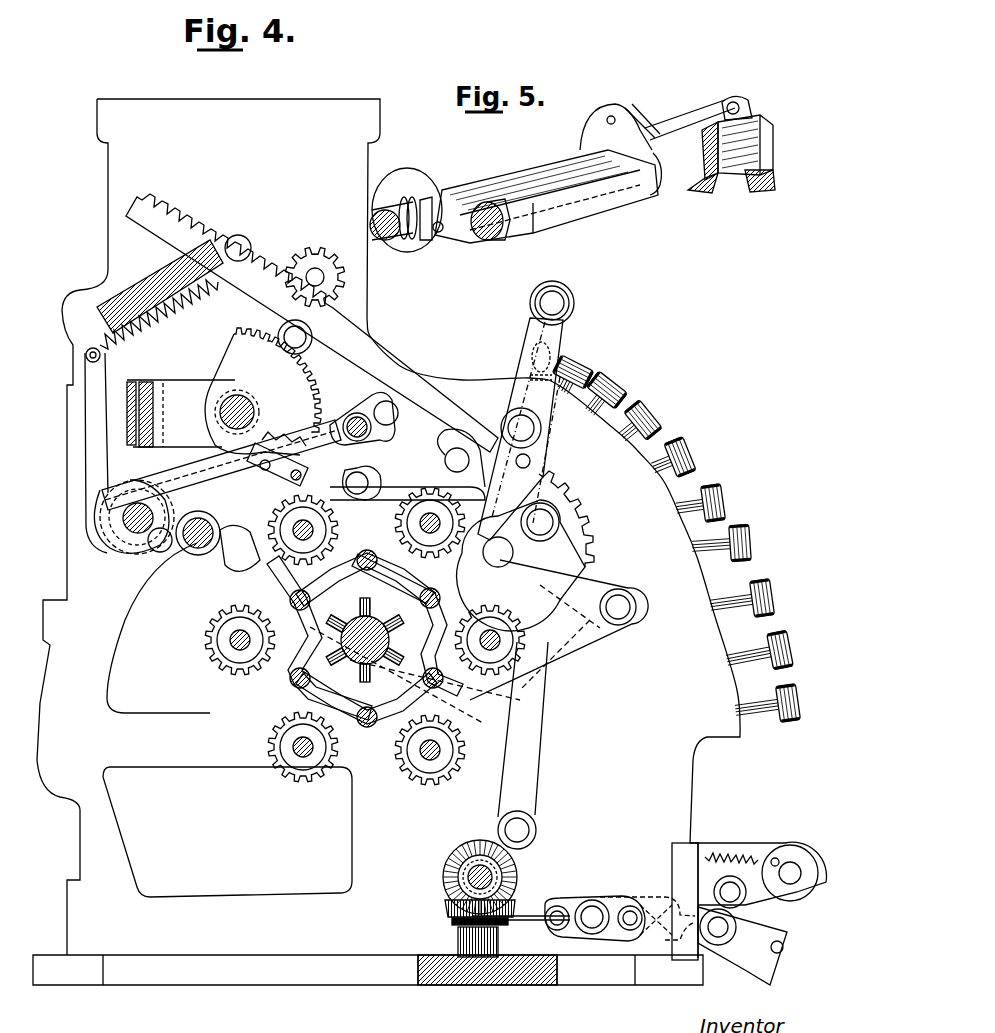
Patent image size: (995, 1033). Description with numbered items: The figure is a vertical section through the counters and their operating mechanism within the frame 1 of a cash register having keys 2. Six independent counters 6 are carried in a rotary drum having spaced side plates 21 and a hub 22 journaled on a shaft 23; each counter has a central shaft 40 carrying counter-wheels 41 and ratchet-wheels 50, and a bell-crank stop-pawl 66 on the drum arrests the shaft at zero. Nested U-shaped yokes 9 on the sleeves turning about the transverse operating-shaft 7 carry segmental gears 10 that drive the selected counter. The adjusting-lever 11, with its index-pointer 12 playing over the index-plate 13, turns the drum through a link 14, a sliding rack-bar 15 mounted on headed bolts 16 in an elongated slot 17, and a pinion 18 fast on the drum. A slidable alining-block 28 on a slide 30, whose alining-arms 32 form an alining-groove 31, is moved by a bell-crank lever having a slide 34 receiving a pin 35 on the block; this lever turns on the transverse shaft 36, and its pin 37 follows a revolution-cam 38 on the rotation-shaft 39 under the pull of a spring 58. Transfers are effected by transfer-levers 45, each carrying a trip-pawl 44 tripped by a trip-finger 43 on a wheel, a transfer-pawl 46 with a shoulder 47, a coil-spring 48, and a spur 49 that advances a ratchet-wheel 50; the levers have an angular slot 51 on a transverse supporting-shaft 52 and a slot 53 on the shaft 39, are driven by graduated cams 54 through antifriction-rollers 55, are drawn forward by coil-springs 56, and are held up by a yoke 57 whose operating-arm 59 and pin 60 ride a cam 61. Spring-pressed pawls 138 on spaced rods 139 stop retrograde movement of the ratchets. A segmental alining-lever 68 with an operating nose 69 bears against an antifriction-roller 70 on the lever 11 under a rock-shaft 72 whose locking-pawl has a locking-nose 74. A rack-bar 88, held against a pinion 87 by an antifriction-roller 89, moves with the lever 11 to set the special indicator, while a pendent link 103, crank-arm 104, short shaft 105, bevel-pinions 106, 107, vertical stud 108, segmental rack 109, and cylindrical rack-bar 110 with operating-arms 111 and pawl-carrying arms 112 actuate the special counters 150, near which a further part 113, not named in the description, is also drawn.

In FIG. 4, the frame 1 is at (386, 542).
In FIG. 4, the keys 2 is at (612, 393).
In FIG. 4, the independent counters 6 is at (223, 657).
In FIG. 4, the transverse operating-shaft 7 is at (263, 391).
In FIG. 4, the U-shaped yokes 9 is at (145, 380).
In FIG. 4, the segmental gear 10 is at (252, 396).
In FIG. 4, the adjusting-lever 11 is at (535, 333).
In FIG. 4, the index-pointer 12 is at (520, 372).
In FIG. 4, the index-plate 13 is at (540, 690).
In FIG. 4, the link 14 is at (545, 630).
In FIG. 4, the sliding rack-bar 15 is at (535, 668).
In FIG. 4, the headed bolts 16 is at (375, 714).
In FIG. 4, the elongated slot 17 is at (562, 597).
In FIG. 4, the pinion 18 is at (350, 588).
In FIG. 4, the side plates 21 is at (290, 682).
In FIG. 4, the hub 22 is at (340, 632).
In FIG. 4, the shaft 23 is at (398, 596).
In FIG. 5, the alining-block 28 is at (775, 160).
In FIG. 5, the slide 30 is at (518, 172).
In FIG. 4, the alining-groove 31 is at (221, 465).
In FIG. 5, the alining-groove 31 is at (773, 136).
In FIG. 4, the alining-arms 32 is at (289, 622).
In FIG. 5, the alining-arms 32 is at (760, 193).
In FIG. 5, the slide 34 is at (733, 98).
In FIG. 5, the pin 35 is at (748, 100).
In FIG. 4, the transverse shaft 36 is at (197, 553).
In FIG. 5, the transverse shaft 36 is at (565, 205).
In FIG. 4, the pin 37 is at (133, 478).
In FIG. 5, the pin 37 is at (614, 112).
In FIG. 4, the revolution-cam 38 is at (150, 479).
In FIG. 5, the revolution-cam 38 is at (643, 126).
In FIG. 4, the rotation-shaft 39 is at (130, 533).
In FIG. 4, the central shaft 40 is at (300, 531).
In FIG. 4, the counter-wheels 41 is at (273, 517).
In FIG. 4, the trip-finger 43 is at (340, 514).
In FIG. 4, the trip-pawl 44 is at (240, 480).
In FIG. 4, the transfer-levers 45 is at (88, 440).
In FIG. 4, the transfer-pawls 46 is at (322, 420).
In FIG. 4, the shoulder 47 is at (255, 447).
In FIG. 4, the coil-spring 48 is at (352, 470).
In FIG. 4, the spur 49 is at (305, 482).
In FIG. 4, the ratchet-wheel 50 is at (307, 563).
In FIG. 5, the ratchet-wheel 50 is at (443, 232).
In FIG. 4, the angular slot 51 is at (368, 416).
In FIG. 4, the transverse supporting-shaft 52 is at (157, 550).
In FIG. 4, the slot 53 is at (390, 413).
In FIG. 4, the graduated cams 54 is at (110, 490).
In FIG. 4, the antifriction-rollers 55 is at (100, 530).
In FIG. 4, the coil-springs 56 is at (176, 316).
In FIG. 4, the yoke 57 is at (218, 555).
In FIG. 5, the yoke 57 is at (612, 205).
In FIG. 4, the spring 58 is at (217, 587).
In FIG. 5, the spring 58 is at (662, 187).
In FIG. 5, the operating-arm 59 is at (688, 116).
In FIG. 5, the pin 60 is at (478, 205).
In FIG. 4, the cam 61 is at (467, 727).
In FIG. 5, the cam 61 is at (408, 180).
In FIG. 4, the bell-crank stop-pawl 66 is at (315, 268).
In FIG. 4, the segmental alining-lever 68 is at (572, 505).
In FIG. 4, the operating nose 69 is at (420, 492).
In FIG. 4, the antifriction-roller 70 is at (531, 461).
In FIG. 4, the rock-shaft 72 is at (455, 450).
In FIG. 4, the locking-nose 74 is at (372, 471).
In FIG. 4, the pinion 87 is at (300, 258).
In FIG. 4, the rack-bar 88 is at (177, 227).
In FIG. 4, the antifriction-roller 89 is at (288, 333).
In FIG. 4, the pendent link 103 is at (533, 770).
In FIG. 4, the crank-arm 104 is at (520, 846).
In FIG. 4, the short shaft 105 is at (505, 873).
In FIG. 4, the bevel-pinion 106 is at (443, 865).
In FIG. 4, the bevel-pinion 107 is at (447, 905).
In FIG. 4, the vertical stud 108 is at (458, 940).
In FIG. 4, the segmental rack 109 is at (522, 916).
In FIG. 4, the cylindrical rack-bar 110 is at (590, 903).
In FIG. 4, the operating-arms 111 is at (633, 893).
In FIG. 4, the pawl-carrying arms 112 is at (655, 926).
In FIG. 4, the cam disk 113 is at (790, 860).
In FIG. 4, the spring-pressed pawls 138 is at (297, 585).
In FIG. 4, the spaced rods 139 is at (255, 605).
In FIG. 4, the special counters 150 is at (745, 847).